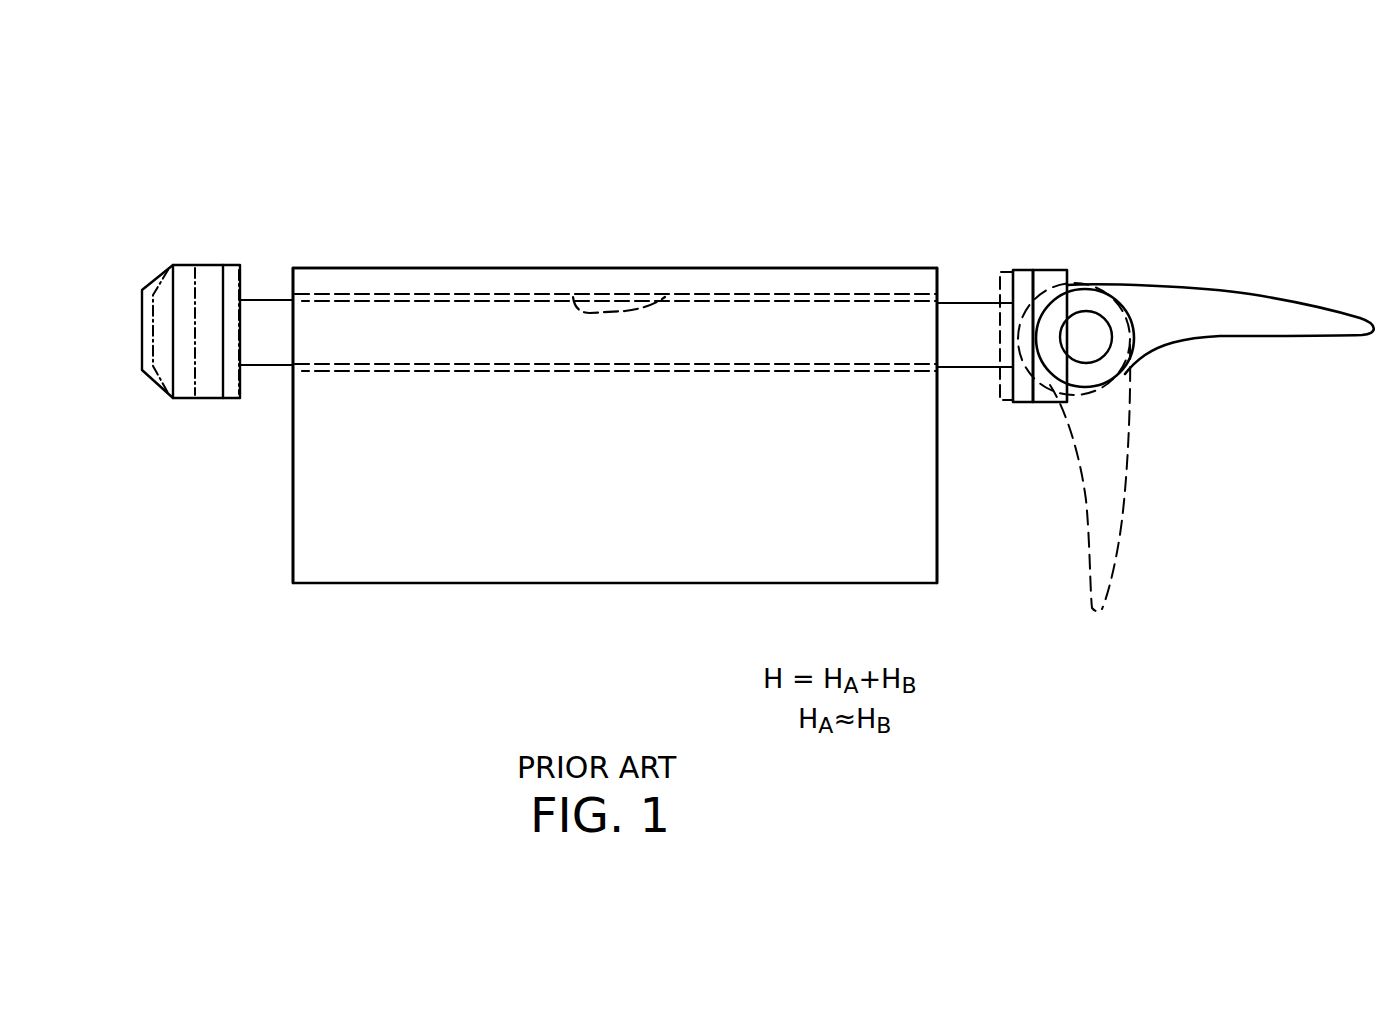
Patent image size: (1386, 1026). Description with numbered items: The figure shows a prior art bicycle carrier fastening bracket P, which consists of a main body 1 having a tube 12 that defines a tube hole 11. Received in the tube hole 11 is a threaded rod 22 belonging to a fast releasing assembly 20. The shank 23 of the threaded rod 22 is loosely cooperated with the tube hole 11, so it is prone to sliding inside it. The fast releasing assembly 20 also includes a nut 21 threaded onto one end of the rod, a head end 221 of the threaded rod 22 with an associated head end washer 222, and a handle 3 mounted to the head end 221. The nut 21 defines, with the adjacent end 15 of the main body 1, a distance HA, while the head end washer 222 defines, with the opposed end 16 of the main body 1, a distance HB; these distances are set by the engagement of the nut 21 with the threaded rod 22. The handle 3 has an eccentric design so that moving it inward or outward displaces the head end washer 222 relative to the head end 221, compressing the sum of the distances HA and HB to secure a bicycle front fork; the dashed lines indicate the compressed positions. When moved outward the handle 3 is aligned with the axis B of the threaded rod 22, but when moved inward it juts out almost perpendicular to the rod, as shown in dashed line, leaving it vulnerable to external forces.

The main body 1 is at (598, 563).
The tube hole 11 is at (670, 297).
The tube 12 is at (478, 280).
The end of the main body 15 is at (293, 278).
The end of the main body 16 is at (939, 281).
The fast releasing assembly 20 is at (1212, 266).
The nut 21 is at (207, 400).
The threaded rod 22 is at (963, 326).
The head end 221 is at (1052, 280).
The head end washer 222 is at (1024, 280).
The shank 23 is at (980, 308).
The handle 3 is at (1217, 328).
The axis B is at (57, 330).
The bicycle carrier fastening bracket P is at (326, 630).
The distance HA is at (293, 391).
The distance HB is at (1000, 395).